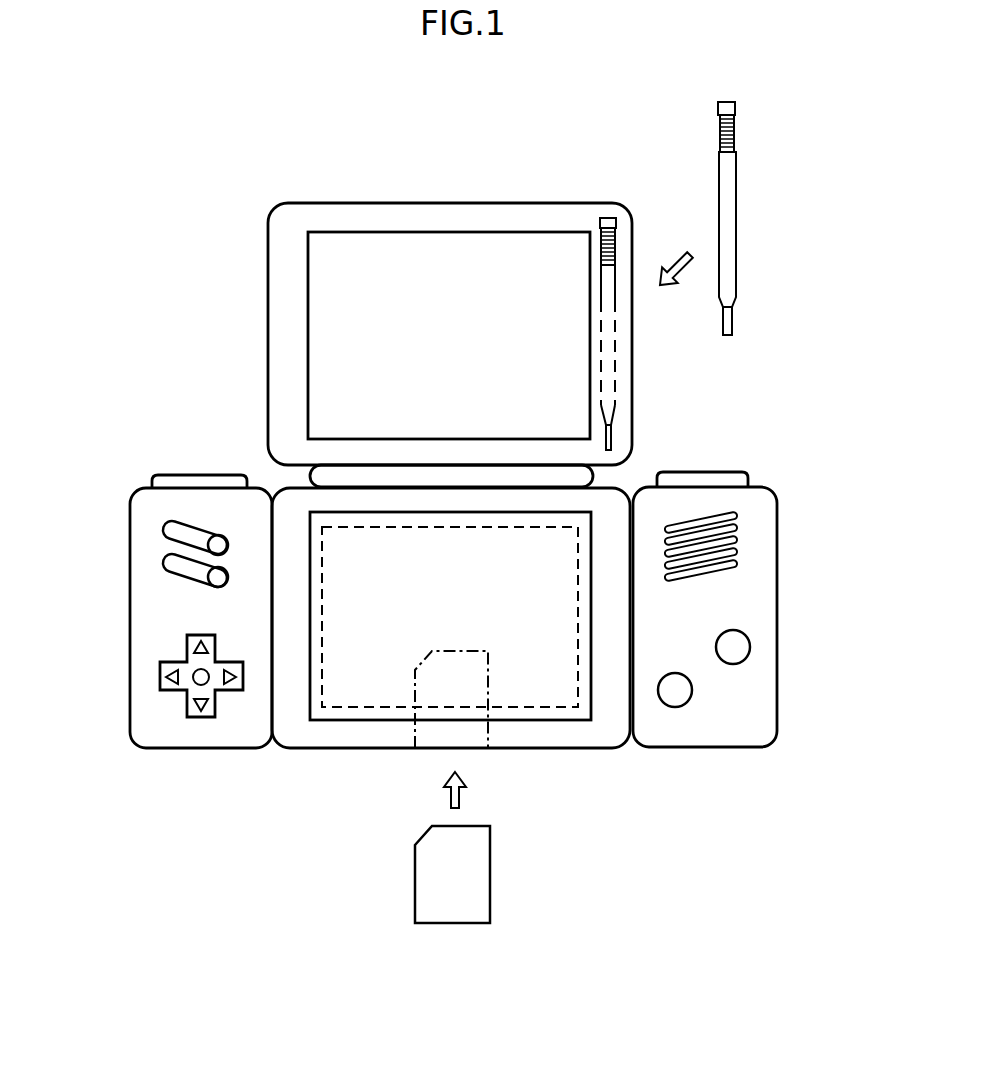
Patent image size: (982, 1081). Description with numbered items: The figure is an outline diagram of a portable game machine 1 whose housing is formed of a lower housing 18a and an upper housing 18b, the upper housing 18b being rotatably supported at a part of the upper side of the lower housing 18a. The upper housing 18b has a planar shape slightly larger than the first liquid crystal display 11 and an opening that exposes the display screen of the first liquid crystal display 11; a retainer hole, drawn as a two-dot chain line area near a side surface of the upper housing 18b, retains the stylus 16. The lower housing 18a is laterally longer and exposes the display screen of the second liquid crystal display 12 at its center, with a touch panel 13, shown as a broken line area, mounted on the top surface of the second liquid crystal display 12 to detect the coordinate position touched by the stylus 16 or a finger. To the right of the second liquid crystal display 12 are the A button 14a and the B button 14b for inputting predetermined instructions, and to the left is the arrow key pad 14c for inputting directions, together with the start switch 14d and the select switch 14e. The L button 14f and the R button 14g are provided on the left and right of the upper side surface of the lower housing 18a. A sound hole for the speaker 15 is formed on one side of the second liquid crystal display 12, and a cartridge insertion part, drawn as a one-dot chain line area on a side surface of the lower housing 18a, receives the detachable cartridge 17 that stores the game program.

The game machine 1 is at (484, 154).
The first liquid crystal display 11 is at (307, 313).
The second liquid crystal display 12 is at (342, 722).
The touch panel 13 is at (562, 705).
The A button 14a is at (750, 647).
The B button 14b is at (678, 707).
The arrow key pad 14c is at (201, 717).
The start switch 14d is at (213, 547).
The select switch 14e is at (208, 580).
The L button 14f is at (197, 477).
The R button 14g is at (720, 470).
The speaker 15 is at (740, 538).
The stylus 16 is at (737, 200).
The cartridge 17 is at (490, 868).
The lower housing 18a is at (618, 485).
The upper housing 18b is at (573, 203).